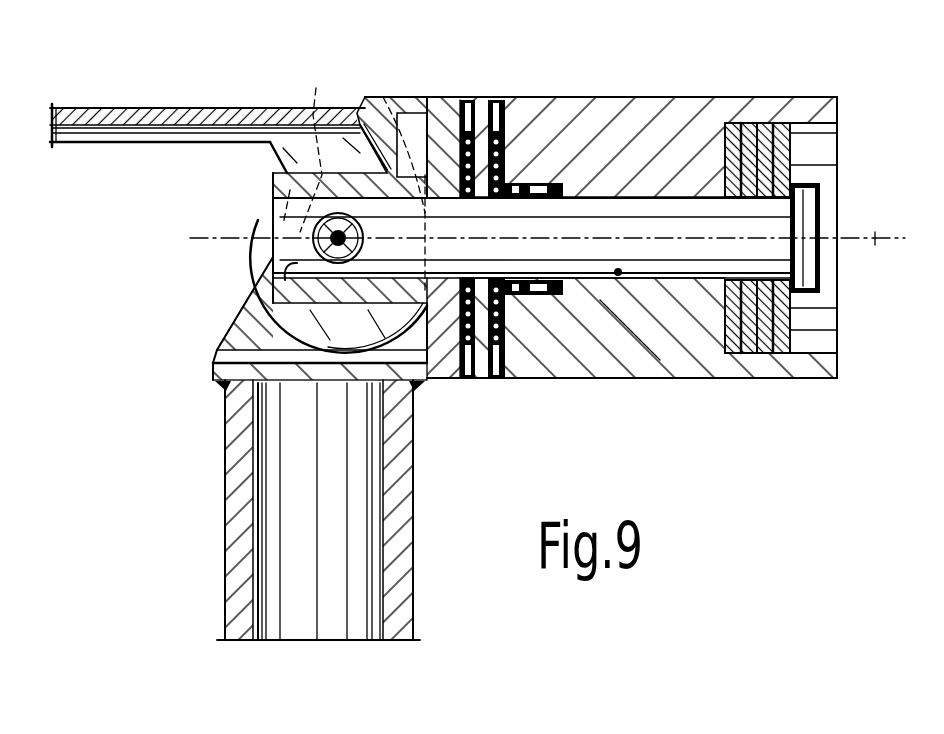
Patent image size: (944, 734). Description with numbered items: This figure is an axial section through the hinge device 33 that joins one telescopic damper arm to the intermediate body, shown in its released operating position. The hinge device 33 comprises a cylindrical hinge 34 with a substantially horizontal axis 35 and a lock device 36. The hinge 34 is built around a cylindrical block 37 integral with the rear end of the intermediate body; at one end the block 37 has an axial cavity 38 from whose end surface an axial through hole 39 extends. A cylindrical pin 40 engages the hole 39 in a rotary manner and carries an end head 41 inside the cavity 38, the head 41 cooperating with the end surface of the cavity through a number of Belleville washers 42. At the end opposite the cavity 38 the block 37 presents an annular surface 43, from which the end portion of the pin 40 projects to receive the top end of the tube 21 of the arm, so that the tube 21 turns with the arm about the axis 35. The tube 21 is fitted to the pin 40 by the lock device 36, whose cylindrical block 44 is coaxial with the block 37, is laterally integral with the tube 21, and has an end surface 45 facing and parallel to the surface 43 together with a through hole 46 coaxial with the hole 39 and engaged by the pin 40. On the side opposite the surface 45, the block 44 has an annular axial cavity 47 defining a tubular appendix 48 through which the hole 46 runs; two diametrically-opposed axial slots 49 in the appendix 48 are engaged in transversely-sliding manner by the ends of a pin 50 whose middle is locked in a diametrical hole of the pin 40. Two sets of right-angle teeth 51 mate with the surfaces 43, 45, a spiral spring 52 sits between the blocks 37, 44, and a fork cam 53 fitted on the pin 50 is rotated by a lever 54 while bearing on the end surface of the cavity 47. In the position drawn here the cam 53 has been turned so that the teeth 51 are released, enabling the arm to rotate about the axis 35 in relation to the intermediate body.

The top tube 21 is at (398, 598).
The hinge device 33 is at (725, 80).
The cylindrical hinge 34 is at (716, 387).
The axis 35 is at (871, 256).
The lock device 36 is at (232, 193).
The cylindrical block 37 is at (628, 332).
The axial cavity 38 is at (825, 158).
The axial through hole 39 is at (618, 265).
The cylindrical pin 40 is at (578, 227).
The end head 41 is at (806, 222).
The Belleville washers 42 is at (772, 122).
The annular surface 43 is at (481, 100).
The cylindrical block 44 is at (452, 356).
The end surface 45 is at (483, 326).
The through hole 46 is at (258, 305).
The annular axial cavity 47 is at (413, 140).
The tubular appendix 48 is at (217, 350).
The axial slots 49 is at (354, 175).
The pin 50 is at (316, 246).
The right-angle teeth 51 is at (508, 326).
The spiral spring 52 is at (527, 181).
The fork cam 53 is at (370, 322).
The lever 54 is at (196, 108).